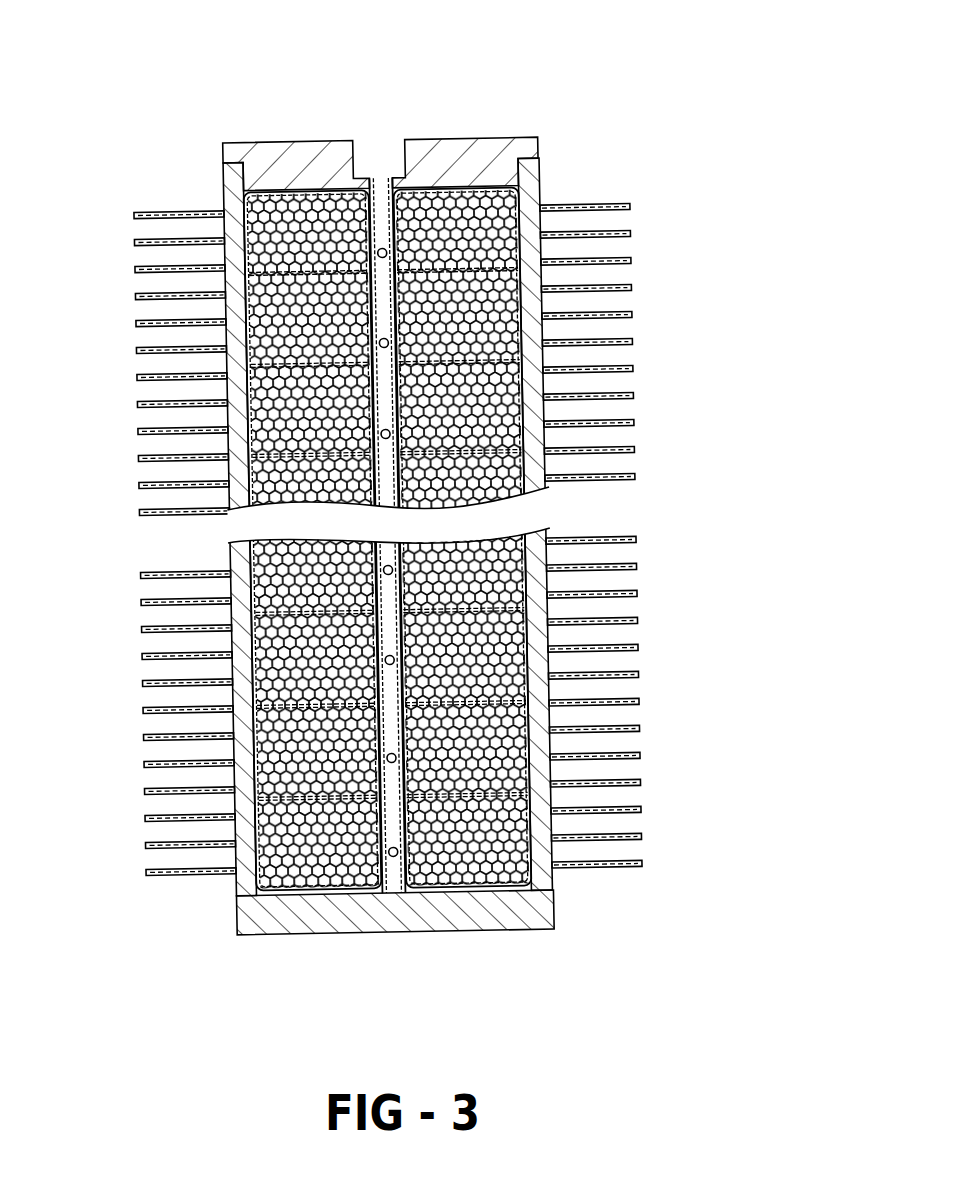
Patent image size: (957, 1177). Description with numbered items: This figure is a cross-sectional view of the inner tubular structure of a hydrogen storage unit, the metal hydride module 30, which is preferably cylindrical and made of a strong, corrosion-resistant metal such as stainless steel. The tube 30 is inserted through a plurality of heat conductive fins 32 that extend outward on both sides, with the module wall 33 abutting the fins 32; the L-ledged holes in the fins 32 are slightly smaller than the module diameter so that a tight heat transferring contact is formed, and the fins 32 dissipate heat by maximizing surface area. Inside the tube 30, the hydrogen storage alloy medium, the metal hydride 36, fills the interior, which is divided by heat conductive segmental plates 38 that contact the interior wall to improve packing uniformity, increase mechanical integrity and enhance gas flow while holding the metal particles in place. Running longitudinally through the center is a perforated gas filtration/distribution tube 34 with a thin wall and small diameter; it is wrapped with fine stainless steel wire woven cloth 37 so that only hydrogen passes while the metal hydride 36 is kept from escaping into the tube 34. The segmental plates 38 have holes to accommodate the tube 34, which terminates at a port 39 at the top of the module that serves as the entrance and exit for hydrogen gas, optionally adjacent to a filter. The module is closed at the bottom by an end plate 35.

The metal hydride module 30 is at (567, 84).
The heat conductive fins 32 is at (595, 311).
The module wall 33 is at (548, 535).
The gas filtration/distribution tube 34 is at (380, 578).
The base plate 35 is at (463, 908).
The metal hydride 36 is at (468, 656).
The wire woven cloth 37 is at (408, 785).
The heat conductive segmental plates 38 is at (306, 797).
The port 39 is at (372, 162).